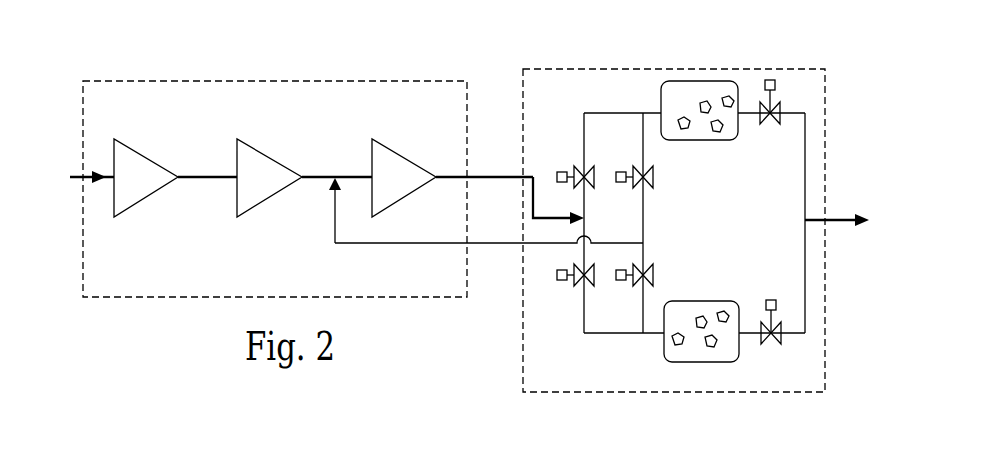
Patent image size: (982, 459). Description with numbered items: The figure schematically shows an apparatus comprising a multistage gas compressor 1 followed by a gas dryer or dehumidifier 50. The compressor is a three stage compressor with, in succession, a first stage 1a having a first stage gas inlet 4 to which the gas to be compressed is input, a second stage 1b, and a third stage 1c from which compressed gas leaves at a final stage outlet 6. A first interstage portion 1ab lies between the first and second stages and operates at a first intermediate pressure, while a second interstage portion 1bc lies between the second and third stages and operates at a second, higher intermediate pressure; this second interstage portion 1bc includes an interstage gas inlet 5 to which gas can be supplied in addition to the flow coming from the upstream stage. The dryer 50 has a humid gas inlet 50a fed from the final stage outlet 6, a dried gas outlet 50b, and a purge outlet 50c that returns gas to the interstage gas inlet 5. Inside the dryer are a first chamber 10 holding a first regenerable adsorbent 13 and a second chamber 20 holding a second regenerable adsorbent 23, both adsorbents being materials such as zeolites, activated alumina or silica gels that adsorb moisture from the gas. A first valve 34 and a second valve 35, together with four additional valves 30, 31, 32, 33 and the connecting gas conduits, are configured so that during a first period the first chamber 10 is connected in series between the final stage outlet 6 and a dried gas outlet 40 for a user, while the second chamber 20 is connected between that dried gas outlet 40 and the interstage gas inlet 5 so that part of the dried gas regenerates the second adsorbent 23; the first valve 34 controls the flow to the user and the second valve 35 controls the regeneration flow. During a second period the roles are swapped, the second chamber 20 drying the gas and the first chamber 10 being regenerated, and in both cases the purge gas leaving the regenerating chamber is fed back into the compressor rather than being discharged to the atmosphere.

The multistage gas compressor 1 is at (200, 81).
The first stage 1a is at (146, 178).
The second stage 1b is at (269, 178).
The third stage 1c is at (404, 178).
The first interstage portion 1ab is at (210, 163).
The second interstage portion 1bc is at (320, 163).
The first stage gas inlet 4 is at (76, 177).
The interstage gas inlet 5 is at (336, 176).
The final stage outlet 6 is at (460, 177).
The dryer 50 is at (570, 69).
The humid gas inlet 50a is at (522, 177).
The dried gas outlet 50b is at (825, 220).
The purge outlet 50c is at (522, 243).
The first chamber 10 is at (698, 81).
The first regenerable adsorbent 13 is at (715, 126).
The second chamber 20 is at (690, 362).
The second regenerable adsorbent 23 is at (721, 315).
The additional valve 30 is at (578, 166).
The additional valve 31 is at (582, 288).
The additional valve 32 is at (652, 182).
The additional valve 33 is at (652, 272).
The first valve 34 is at (770, 122).
The second valve 35 is at (772, 344).
The dried gas outlet 40 is at (858, 226).